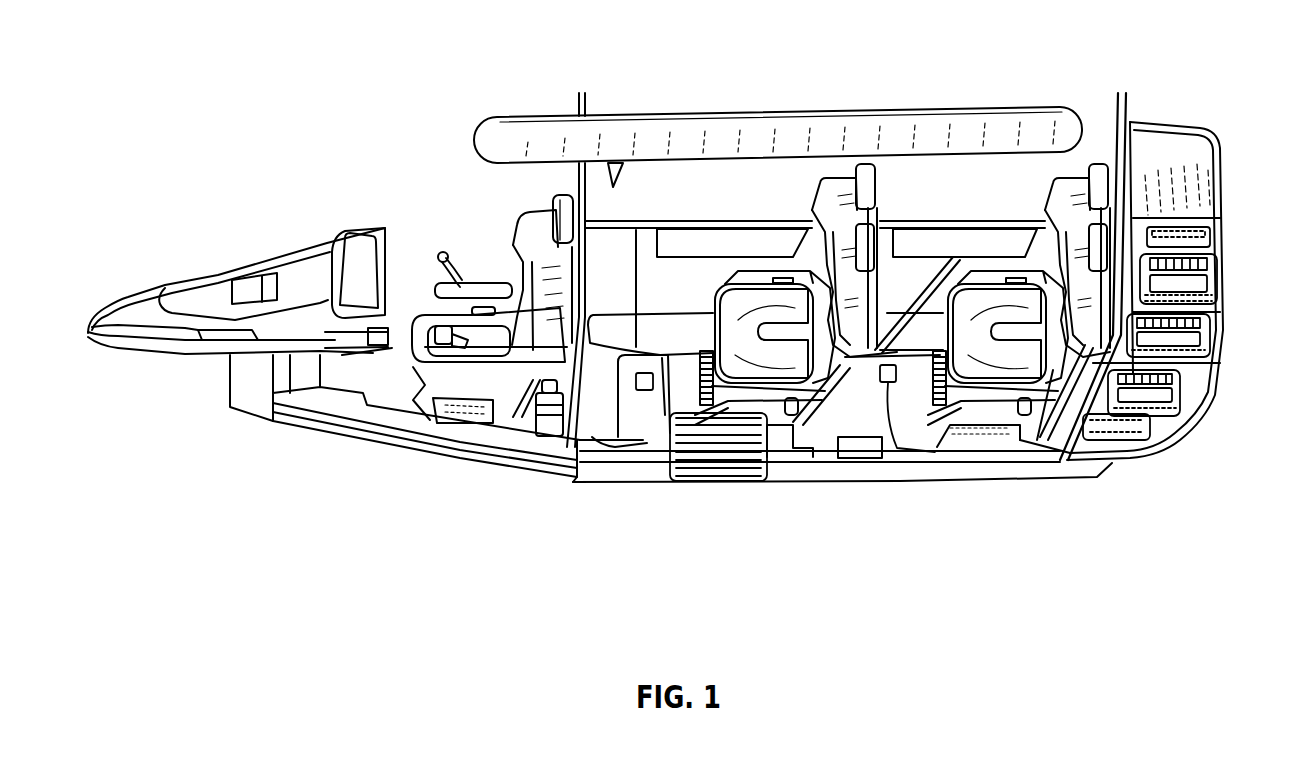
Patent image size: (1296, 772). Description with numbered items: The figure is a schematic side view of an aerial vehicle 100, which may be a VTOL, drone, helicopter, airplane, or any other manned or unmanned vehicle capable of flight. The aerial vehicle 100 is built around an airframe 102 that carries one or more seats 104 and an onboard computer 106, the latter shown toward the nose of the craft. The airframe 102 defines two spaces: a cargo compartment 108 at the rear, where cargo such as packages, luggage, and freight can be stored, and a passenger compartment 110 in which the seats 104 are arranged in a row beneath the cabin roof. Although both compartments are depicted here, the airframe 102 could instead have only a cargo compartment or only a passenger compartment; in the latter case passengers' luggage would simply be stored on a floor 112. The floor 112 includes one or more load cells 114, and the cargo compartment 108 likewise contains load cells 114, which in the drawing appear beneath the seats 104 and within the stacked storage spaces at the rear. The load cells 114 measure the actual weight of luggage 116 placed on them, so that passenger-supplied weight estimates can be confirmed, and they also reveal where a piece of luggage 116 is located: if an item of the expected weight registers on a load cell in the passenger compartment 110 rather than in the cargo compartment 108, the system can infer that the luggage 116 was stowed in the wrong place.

The aerial vehicle 100 is at (283, 78).
The airframe 102 is at (1167, 130).
The seats 104 is at (525, 235).
The onboard computer 106 is at (293, 249).
The cargo compartment 108 is at (1196, 418).
The passenger compartment 110 is at (817, 448).
The floor 112 is at (897, 448).
The load cells 114 is at (1217, 298).
The luggage 116 is at (1213, 260).